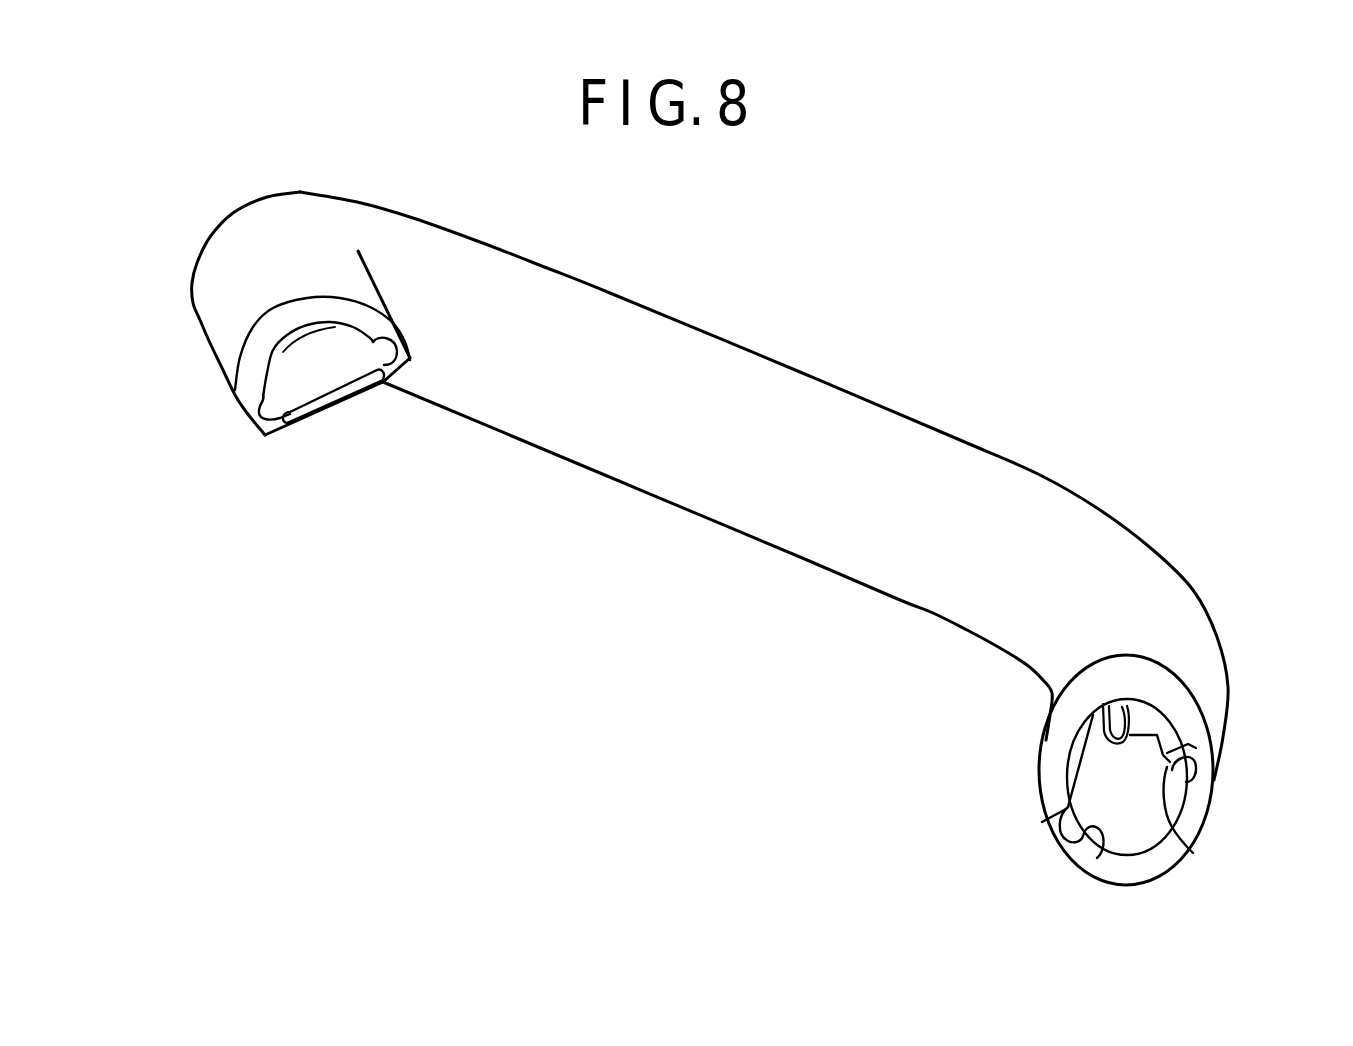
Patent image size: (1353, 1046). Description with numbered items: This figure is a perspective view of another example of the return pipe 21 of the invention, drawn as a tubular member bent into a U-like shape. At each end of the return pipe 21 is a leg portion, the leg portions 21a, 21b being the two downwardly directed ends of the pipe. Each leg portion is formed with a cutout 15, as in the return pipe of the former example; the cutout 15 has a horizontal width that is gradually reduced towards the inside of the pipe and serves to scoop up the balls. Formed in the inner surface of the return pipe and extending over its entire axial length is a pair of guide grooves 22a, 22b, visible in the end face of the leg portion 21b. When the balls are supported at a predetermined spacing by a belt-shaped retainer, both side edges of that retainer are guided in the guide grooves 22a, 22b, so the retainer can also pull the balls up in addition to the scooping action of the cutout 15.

The return pipe 21 is at (705, 352).
The leg portion 21a is at (253, 288).
The leg portion 21b is at (1222, 689).
The cutout 15 is at (1046, 766).
The guide groove 22a is at (1107, 850).
The guide groove 22b is at (1173, 837).